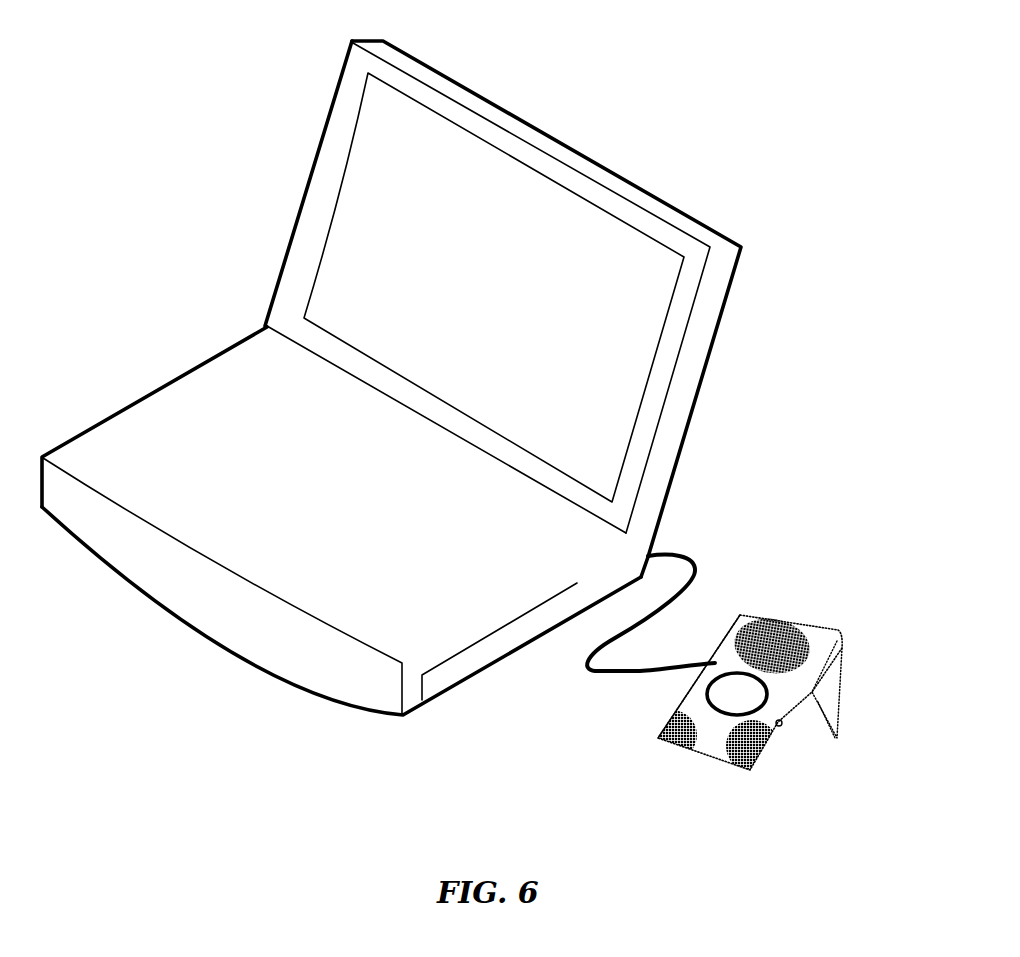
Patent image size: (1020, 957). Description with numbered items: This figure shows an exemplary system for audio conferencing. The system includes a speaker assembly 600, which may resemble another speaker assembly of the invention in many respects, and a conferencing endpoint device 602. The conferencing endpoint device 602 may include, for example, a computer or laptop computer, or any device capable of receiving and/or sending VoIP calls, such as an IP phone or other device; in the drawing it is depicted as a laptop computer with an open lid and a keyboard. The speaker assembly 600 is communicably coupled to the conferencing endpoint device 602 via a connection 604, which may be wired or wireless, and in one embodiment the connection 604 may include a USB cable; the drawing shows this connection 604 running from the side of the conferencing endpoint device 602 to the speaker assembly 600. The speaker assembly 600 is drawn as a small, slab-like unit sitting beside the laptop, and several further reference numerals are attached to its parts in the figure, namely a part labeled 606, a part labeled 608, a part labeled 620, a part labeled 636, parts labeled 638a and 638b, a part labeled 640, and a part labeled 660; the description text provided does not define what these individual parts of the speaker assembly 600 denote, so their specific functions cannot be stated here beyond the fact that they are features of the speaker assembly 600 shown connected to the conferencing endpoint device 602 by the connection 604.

The speaker assembly 600 is at (817, 618).
The conferencing endpoint device 602 is at (642, 190).
The connection 604 is at (688, 557).
The housing 606 is at (752, 615).
The stand 608 is at (825, 673).
The button 620 is at (707, 703).
The sensor region 636 is at (750, 640).
The sensor 638a is at (680, 737).
The sensor 638b is at (755, 752).
The kickstand 640 is at (825, 709).
The indicator 660 is at (782, 726).